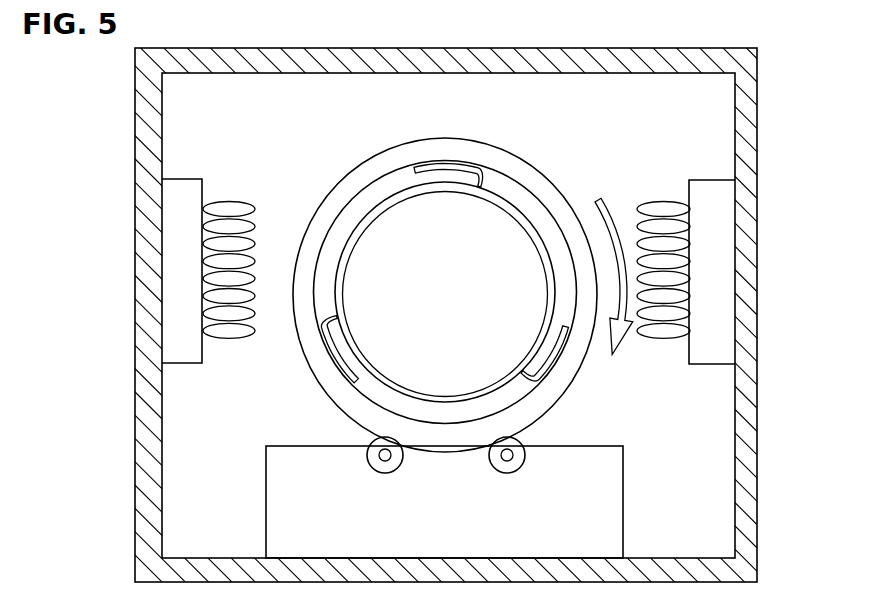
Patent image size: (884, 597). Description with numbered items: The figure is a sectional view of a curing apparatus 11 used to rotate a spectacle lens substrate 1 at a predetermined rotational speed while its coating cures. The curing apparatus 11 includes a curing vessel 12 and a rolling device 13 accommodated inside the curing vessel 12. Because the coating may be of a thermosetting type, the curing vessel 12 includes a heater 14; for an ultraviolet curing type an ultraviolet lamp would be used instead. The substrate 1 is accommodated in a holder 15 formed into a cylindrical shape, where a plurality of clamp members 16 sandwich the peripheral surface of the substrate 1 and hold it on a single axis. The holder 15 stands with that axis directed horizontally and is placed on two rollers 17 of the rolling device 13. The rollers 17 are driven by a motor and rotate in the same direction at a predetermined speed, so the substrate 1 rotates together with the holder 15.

The spectacle lens substrate 1 is at (510, 200).
The curing apparatus 11 is at (128, 122).
The curing vessel 12 is at (757, 108).
The rolling device 13 is at (288, 446).
The heater 14 is at (656, 203).
The holder 15 is at (348, 170).
The clamp members 16 is at (477, 172).
The rollers 17 is at (373, 469).